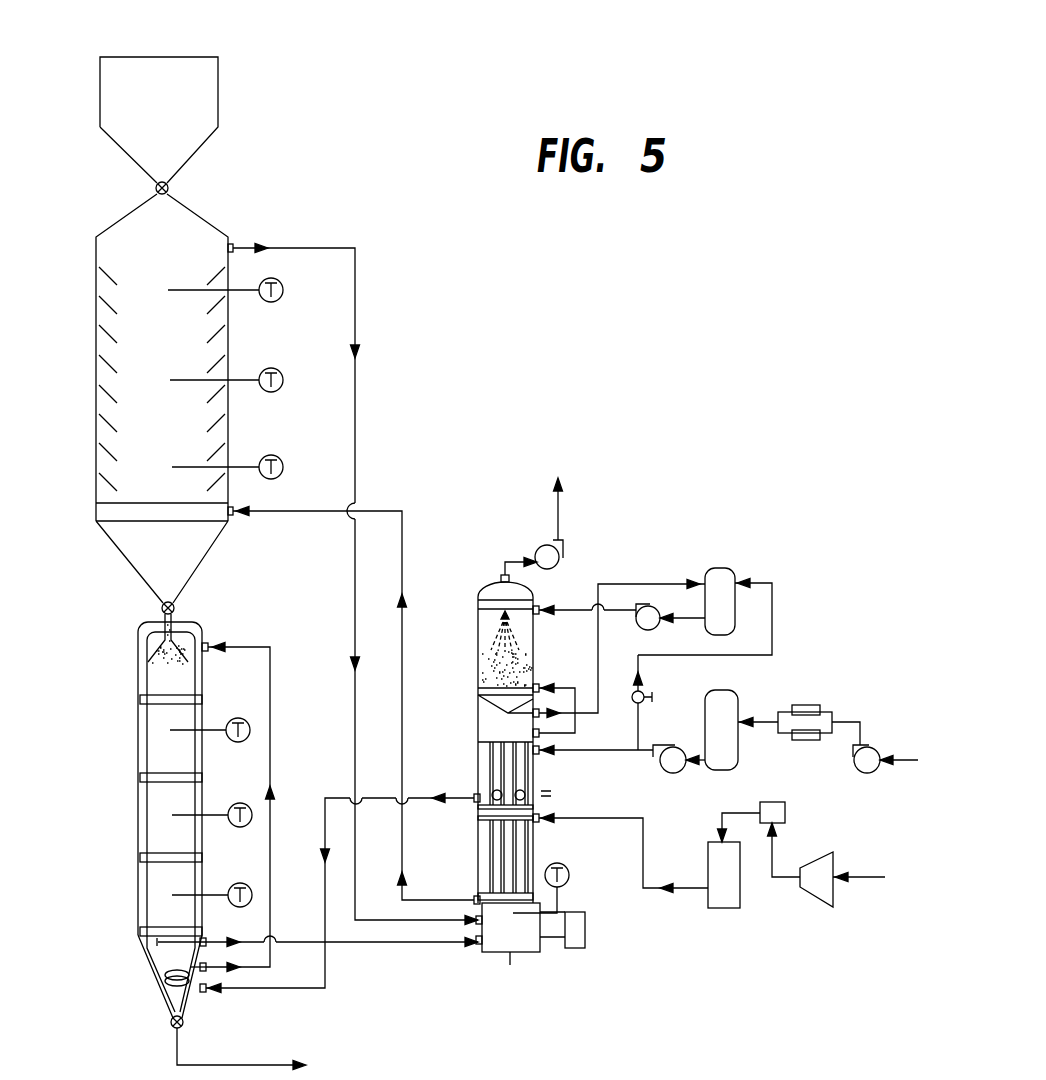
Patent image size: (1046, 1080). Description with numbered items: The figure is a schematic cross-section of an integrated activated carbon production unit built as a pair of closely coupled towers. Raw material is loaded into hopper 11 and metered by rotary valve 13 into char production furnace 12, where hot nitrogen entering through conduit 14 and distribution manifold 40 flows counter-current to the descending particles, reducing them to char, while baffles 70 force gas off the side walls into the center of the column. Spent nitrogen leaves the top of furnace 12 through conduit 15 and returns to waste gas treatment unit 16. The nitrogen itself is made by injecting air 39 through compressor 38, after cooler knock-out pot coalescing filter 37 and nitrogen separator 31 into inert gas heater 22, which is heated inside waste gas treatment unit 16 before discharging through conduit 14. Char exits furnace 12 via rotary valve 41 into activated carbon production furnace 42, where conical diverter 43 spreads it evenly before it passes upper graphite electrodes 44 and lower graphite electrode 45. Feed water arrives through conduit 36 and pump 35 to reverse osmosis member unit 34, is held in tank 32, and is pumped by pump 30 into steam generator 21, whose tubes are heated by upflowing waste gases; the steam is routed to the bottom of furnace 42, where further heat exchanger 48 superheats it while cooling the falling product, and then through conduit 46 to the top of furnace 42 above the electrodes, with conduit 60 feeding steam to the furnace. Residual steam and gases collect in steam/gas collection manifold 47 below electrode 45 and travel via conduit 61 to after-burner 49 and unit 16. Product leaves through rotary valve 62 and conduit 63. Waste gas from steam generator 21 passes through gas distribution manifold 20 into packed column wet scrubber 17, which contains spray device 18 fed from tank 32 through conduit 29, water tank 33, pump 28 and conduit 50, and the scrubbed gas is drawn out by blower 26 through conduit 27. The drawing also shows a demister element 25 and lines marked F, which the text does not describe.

The hopper 11 is at (218, 88).
The rotary valve 13 is at (170, 190).
The char production furnace 12 is at (161, 348).
The baffles 70 is at (218, 358).
The distribution manifold 40 is at (110, 511).
The conduit 15 is at (318, 248).
The conduit 14 is at (288, 513).
The rotary valve 41 is at (176, 610).
The activated carbon production furnace 42 is at (166, 804).
The conical diverter 43 is at (160, 662).
The upper graphite electrodes 44 is at (142, 698).
The lower graphite electrode 45 is at (142, 931).
The conduit 46 is at (262, 647).
The steam/gas collection manifold 47 is at (158, 943).
The further heat exchanger 48 is at (172, 972).
The conduit 61 is at (290, 942).
The conduit 60 is at (262, 990).
The rotary valve 62 is at (170, 1023).
The conduit 63 is at (245, 1065).
The packed column wet scrubber 17 is at (492, 583).
The demister 25 is at (485, 600).
The spray device 18 is at (498, 612).
The gas distribution manifold 20 is at (485, 694).
The steam generator 21 is at (478, 760).
The inert gas heater 22 is at (478, 855).
The waste gas treatment unit 16 is at (512, 966).
The after-burner 49 is at (576, 912).
The blower 26 is at (563, 548).
The conduit 27 is at (558, 508).
The conduit 50 is at (567, 608).
The pump 28 is at (648, 604).
The water tank 33 is at (720, 568).
The conduit 29 is at (644, 695).
The fluid line F is at (590, 750).
The pump 30 is at (672, 773).
The tank 32 is at (725, 690).
The reverse osmosis member unit 34 is at (805, 705).
The pump 35 is at (870, 747).
The conduit 36 is at (900, 762).
The after cooler knock-out pot coalescing filter 37 is at (772, 802).
The nitrogen separator 31 is at (708, 860).
The compressor 38 is at (815, 898).
The air 39 is at (870, 877).